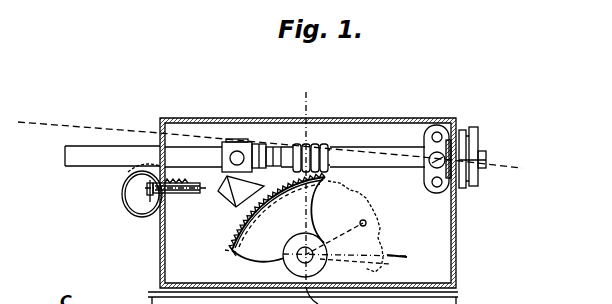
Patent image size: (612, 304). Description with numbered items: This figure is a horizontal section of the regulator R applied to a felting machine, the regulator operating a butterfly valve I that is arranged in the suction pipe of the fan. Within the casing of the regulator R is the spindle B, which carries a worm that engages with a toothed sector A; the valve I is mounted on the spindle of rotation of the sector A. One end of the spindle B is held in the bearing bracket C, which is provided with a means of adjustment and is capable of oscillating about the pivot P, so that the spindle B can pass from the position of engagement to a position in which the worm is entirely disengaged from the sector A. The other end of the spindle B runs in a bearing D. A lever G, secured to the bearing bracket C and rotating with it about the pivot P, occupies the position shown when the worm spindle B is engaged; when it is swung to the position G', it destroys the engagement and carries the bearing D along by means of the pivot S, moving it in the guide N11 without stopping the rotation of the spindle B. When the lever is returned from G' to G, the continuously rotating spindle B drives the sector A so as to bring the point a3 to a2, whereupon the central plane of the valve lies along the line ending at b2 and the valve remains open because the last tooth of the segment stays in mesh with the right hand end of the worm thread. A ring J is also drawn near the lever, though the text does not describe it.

The regulator R is at (392, 121).
The valve central plane position b2 is at (317, 185).
The disengaged lever position G' is at (270, 137).
The lever G is at (235, 156).
The ring handle J is at (133, 194).
The bearing D is at (223, 143).
The pivot S is at (222, 194).
The guide N11 is at (268, 146).
The spindle B is at (345, 160).
The bearing bracket C is at (424, 144).
The pivot P is at (462, 148).
The toothed sector A is at (278, 225).
The sector point a2 is at (328, 178).
The sector point a3 is at (237, 252).
The butterfly valve I is at (346, 247).